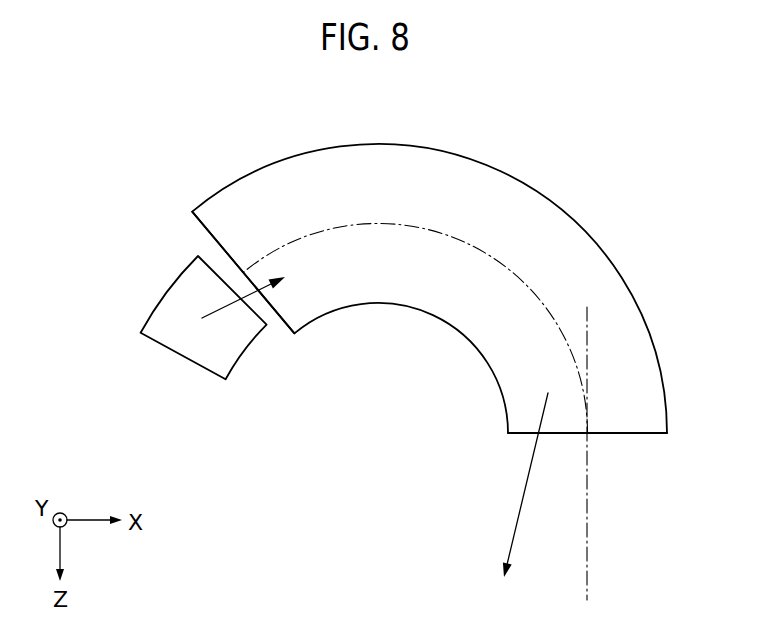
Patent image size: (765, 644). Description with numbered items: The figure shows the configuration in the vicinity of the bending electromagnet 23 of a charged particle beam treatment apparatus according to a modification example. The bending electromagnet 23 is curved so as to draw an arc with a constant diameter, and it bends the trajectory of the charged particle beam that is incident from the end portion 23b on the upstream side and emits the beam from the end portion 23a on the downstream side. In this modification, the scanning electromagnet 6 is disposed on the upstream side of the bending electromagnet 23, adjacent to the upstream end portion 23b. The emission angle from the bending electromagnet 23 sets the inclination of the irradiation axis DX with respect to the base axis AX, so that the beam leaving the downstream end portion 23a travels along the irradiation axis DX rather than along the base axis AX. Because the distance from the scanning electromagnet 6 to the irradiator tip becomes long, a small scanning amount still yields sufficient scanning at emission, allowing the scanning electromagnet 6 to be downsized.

The bending electromagnet 23 is at (565, 212).
The end portion on the downstream side 23a is at (637, 435).
The end portion on the upstream side 23b is at (208, 230).
The scanning electromagnet 6 is at (162, 285).
The irradiation axis DX is at (516, 523).
The base axis AX is at (589, 553).